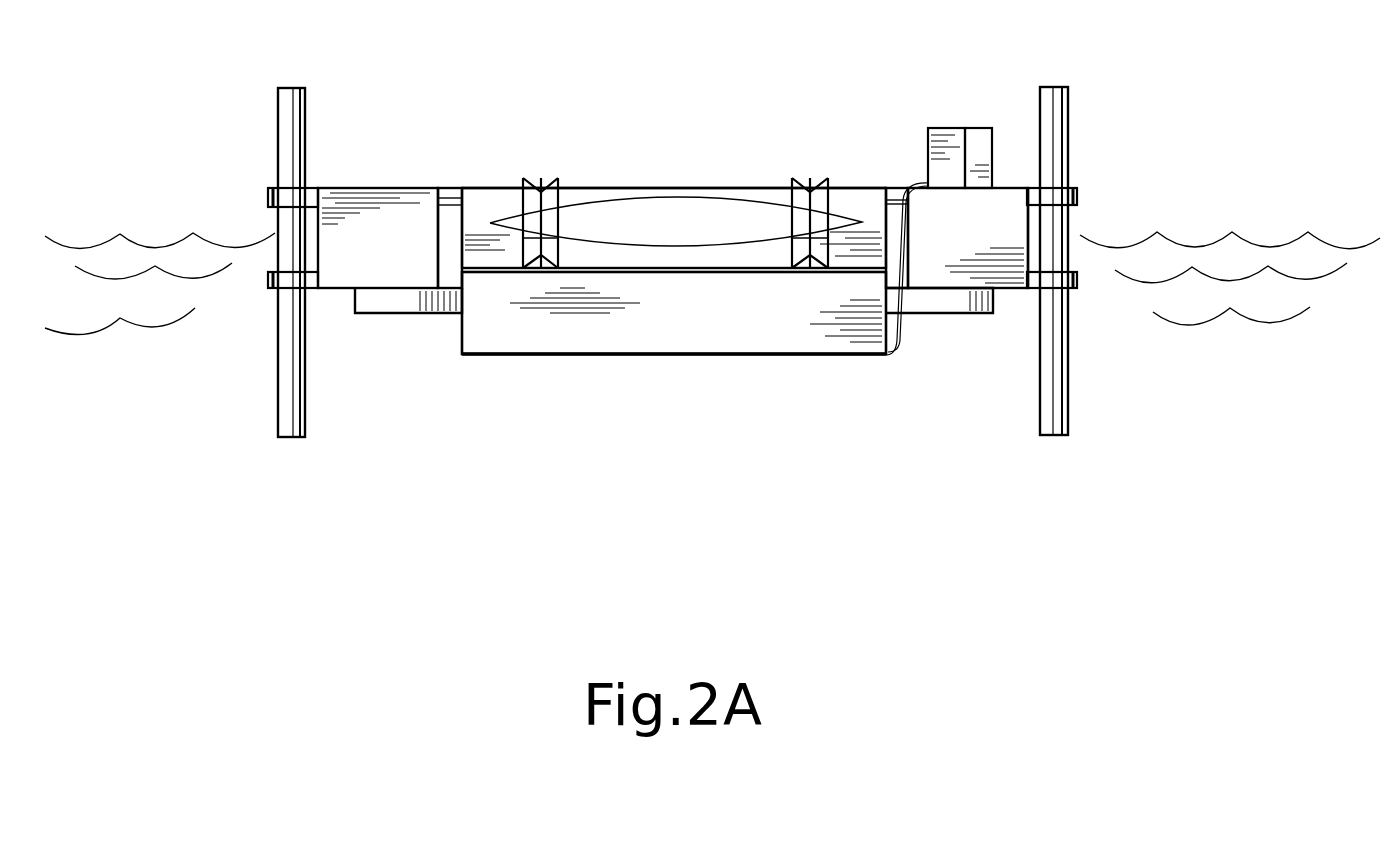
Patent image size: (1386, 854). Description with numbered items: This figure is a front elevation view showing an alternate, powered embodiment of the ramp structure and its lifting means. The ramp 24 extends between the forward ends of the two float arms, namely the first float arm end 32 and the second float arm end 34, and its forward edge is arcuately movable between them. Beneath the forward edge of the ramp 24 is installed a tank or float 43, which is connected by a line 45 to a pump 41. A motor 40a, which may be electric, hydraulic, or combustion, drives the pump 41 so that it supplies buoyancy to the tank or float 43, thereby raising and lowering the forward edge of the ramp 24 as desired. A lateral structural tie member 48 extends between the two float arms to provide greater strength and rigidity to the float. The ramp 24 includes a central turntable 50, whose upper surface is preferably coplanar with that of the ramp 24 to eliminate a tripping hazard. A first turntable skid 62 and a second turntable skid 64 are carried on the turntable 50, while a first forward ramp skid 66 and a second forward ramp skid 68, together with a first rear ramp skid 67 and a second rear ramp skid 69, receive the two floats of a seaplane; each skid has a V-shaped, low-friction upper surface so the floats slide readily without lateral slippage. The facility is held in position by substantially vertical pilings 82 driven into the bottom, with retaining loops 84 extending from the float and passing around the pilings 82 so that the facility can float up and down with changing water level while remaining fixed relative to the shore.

The ramp 24 is at (603, 188).
The first float arm end 32 is at (410, 251).
The second float arm end 34 is at (1000, 241).
The motor 40a is at (975, 128).
The pump 41 is at (942, 128).
The tank or float 43 is at (708, 322).
The line 45 is at (900, 280).
The lateral structural tie member 48 is at (388, 305).
The central turntable 50 is at (705, 234).
The first turntable skid 62 is at (532, 218).
The second turntable skid 64 is at (800, 218).
The first forward ramp skid 66 is at (532, 248).
The first rear ramp skid 67 is at (547, 187).
The second forward ramp skid 68 is at (825, 250).
The second rear ramp skid 69 is at (813, 178).
The piling 82 is at (278, 400).
The retaining loop 84 is at (268, 284).